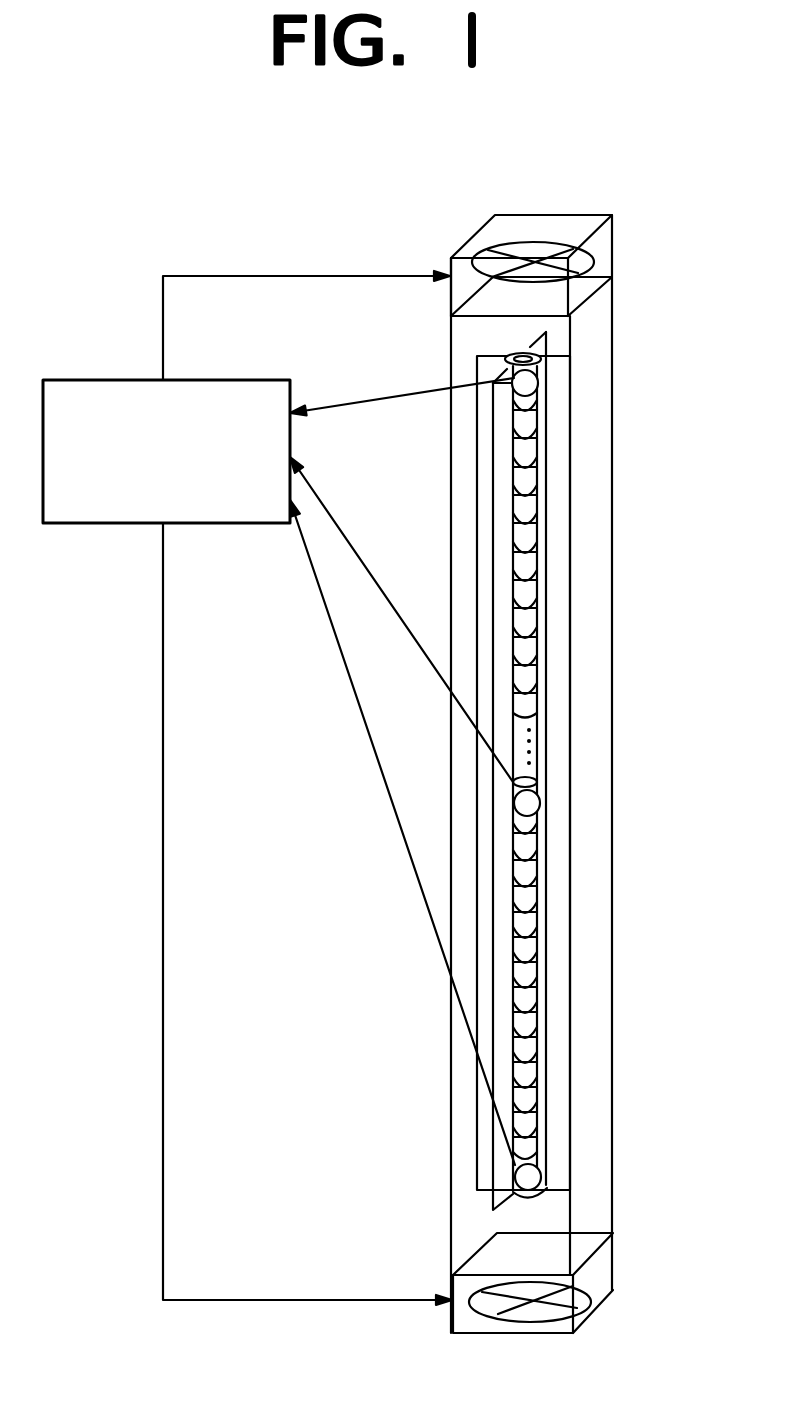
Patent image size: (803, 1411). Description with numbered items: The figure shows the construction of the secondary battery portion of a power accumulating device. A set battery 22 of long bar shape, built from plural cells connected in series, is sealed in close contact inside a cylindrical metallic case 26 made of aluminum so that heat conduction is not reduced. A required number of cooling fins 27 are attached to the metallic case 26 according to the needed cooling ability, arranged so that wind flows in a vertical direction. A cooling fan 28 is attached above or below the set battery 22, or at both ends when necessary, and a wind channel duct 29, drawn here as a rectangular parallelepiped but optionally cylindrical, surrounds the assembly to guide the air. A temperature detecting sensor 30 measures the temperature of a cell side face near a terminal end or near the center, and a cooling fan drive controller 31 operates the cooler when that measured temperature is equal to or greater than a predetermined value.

The set battery 22 is at (536, 503).
The metallic case 26 is at (505, 357).
The cooling fins 27 is at (557, 410).
The cooling fan 28 is at (592, 262).
The wind channel duct 29 is at (612, 328).
The temperature detecting sensor 30 is at (512, 379).
The cooling fan drive controller 31 is at (220, 380).